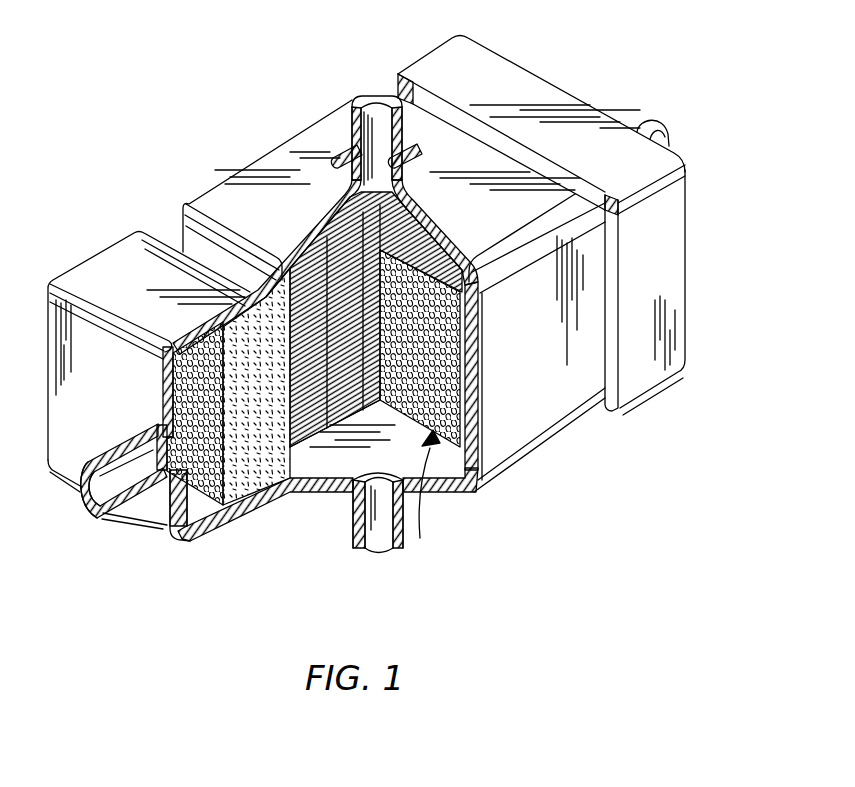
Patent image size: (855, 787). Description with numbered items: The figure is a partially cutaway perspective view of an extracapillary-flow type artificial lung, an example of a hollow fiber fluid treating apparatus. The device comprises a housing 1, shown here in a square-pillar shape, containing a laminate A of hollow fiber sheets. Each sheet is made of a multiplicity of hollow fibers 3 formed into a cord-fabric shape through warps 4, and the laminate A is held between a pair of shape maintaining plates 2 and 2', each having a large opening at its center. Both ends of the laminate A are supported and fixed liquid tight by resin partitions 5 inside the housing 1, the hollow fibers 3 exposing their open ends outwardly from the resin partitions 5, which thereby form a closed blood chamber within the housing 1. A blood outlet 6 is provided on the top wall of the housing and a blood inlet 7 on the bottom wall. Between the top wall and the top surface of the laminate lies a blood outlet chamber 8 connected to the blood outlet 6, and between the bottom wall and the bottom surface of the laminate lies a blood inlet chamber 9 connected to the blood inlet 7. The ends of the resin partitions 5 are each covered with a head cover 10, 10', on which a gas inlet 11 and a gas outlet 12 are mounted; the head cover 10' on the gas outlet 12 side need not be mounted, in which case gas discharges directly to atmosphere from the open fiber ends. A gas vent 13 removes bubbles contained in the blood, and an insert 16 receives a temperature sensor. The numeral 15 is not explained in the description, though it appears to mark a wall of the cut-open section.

The housing 1 is at (552, 402).
The shape maintaining plate 2 is at (256, 407).
The shape maintaining plate 2' is at (149, 337).
The hollow fibers 3 is at (303, 447).
The warps 4 is at (324, 425).
The resin partition 5 is at (237, 478).
The blood outlet 6 is at (366, 94).
The blood inlet 7 is at (357, 551).
The blood outlet chamber 8 is at (312, 232).
The blood inlet chamber 9 is at (450, 478).
The head cover 10 is at (135, 507).
The head cover 10' is at (645, 308).
The gas inlet 11 is at (92, 520).
The gas outlet 12 is at (650, 127).
The gas vent 13 is at (405, 160).
The partition wall 15 is at (467, 412).
The insert for a temperature sensor 16 is at (342, 146).
The laminate of hollow fiber sheets A is at (425, 498).